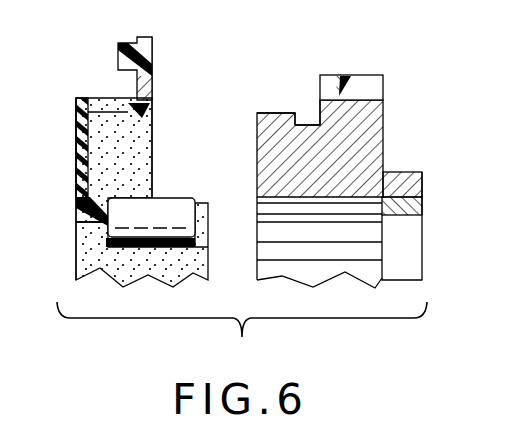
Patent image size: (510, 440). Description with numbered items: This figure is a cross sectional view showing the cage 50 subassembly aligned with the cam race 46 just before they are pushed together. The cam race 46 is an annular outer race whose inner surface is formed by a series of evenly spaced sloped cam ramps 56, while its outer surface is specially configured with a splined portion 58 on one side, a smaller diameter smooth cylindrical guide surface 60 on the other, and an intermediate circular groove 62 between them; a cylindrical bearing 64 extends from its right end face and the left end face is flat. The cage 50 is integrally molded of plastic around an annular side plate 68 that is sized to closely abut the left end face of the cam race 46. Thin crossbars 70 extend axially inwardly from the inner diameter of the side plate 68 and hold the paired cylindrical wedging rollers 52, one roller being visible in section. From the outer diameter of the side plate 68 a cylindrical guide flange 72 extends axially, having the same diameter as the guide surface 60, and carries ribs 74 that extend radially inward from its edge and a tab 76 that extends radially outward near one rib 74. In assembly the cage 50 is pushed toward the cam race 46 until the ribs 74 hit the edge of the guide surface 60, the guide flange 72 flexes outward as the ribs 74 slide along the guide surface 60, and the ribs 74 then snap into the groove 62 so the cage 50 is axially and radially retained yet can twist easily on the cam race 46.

The cam race 46 is at (394, 134).
The cage 50 is at (77, 90).
The wedging rollers 52 is at (170, 217).
The cam ramps 56 is at (372, 230).
The splined portion 58 is at (367, 88).
The guide surface 60 is at (263, 113).
The groove 62 is at (308, 123).
The bearing 64 is at (410, 190).
The side plate 68 is at (82, 188).
The crossbars 70 is at (88, 236).
The guide flange 72 is at (110, 100).
The ribs 74 is at (137, 122).
The tab 76 is at (150, 53).